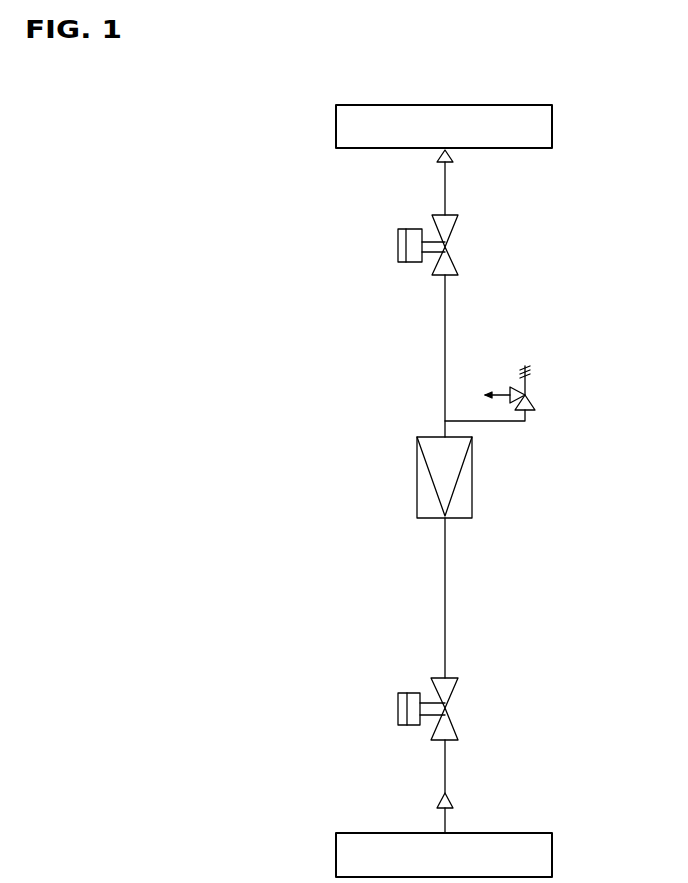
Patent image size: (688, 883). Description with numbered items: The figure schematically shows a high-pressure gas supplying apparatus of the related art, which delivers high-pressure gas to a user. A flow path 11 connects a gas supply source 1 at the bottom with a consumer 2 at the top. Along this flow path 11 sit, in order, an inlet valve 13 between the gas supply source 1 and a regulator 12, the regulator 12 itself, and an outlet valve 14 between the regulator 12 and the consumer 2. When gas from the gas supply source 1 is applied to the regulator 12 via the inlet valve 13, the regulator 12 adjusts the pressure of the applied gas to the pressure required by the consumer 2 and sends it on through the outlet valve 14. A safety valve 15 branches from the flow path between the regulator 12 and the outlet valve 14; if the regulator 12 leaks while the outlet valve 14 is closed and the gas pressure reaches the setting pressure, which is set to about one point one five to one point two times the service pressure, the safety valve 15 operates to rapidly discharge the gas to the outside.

The gas supply source 1 is at (553, 853).
The consumer 2 is at (553, 125).
The flow path 11 is at (458, 595).
The regulator 12 is at (486, 478).
The inlet valve 13 is at (469, 722).
The outlet valve 14 is at (466, 258).
The safety valve 15 is at (545, 392).